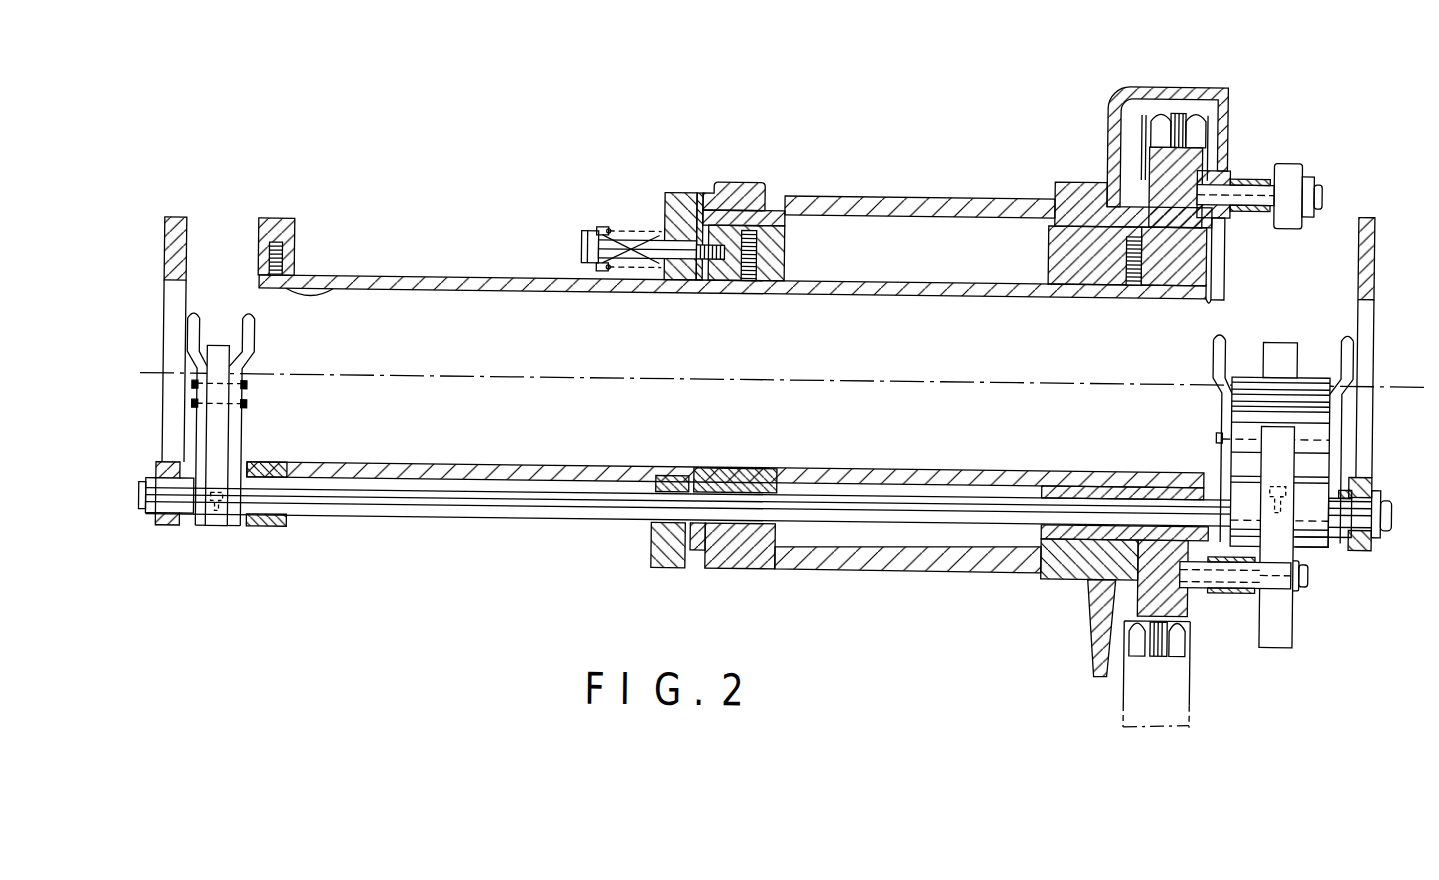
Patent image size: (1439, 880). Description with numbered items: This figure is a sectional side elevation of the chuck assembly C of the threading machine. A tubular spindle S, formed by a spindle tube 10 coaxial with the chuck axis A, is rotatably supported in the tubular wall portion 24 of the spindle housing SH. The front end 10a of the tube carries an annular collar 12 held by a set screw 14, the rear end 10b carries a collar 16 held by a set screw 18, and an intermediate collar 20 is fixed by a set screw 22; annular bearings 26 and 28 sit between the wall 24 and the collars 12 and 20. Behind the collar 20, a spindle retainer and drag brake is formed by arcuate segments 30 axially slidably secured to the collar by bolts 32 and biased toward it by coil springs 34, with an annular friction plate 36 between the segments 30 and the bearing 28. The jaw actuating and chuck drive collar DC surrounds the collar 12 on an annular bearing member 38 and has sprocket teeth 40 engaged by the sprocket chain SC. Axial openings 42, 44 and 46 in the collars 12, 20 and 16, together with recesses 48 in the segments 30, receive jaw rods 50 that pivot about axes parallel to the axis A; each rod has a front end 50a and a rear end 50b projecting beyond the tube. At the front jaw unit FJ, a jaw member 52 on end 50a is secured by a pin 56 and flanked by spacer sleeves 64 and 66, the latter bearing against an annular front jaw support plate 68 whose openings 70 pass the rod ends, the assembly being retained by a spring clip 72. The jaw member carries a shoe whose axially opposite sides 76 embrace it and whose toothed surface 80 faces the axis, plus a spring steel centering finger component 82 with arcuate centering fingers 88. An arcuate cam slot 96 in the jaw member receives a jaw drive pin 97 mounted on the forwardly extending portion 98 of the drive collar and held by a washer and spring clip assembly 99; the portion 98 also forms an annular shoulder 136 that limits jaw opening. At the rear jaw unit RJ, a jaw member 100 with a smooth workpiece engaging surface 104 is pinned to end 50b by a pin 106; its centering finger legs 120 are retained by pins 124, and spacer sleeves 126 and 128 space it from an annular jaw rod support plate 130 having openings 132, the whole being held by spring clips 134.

The spindle tube 10 is at (452, 281).
The front end 10a is at (1215, 296).
The rear end 10b is at (334, 291).
The annular collar 12 is at (1052, 241).
The set screw 14 is at (1128, 267).
The collar 16 is at (293, 237).
The set screw 18 is at (283, 265).
The collar 20 is at (788, 240).
The set screw 22 is at (788, 264).
The tubular wall portion 24 is at (830, 196).
The annular bearing 26 is at (1052, 210).
The annular bearing 28 is at (755, 190).
The arcuate segments 30 is at (668, 196).
The bolts 32 is at (632, 247).
The coil spring 34 is at (628, 268).
The annular friction plate 36 is at (698, 200).
The annular bearing member 38 is at (1142, 235).
The sprocket teeth 40 is at (1190, 110).
The axially extending opening 42 is at (1070, 493).
The axially extending opening 44 is at (740, 490).
The axially extending opening 46 is at (268, 483).
The recesses 48 is at (640, 476).
The jaw rod 50 is at (845, 508).
The front end 50a is at (1385, 517).
The rear end 50b is at (153, 496).
The jaw member 52 is at (1278, 642).
The pin 56 is at (1262, 470).
The spacer sleeve 64 is at (1243, 504).
The spacer sleeve 66 is at (1312, 543).
The annular front jaw support plate 68 is at (1378, 230).
The openings 70 is at (1362, 494).
The spring clip 72 is at (1385, 497).
The axially opposite sides 76 is at (1243, 416).
The arcuate toothed workpiece engaging surface 80 is at (1245, 366).
The centering finger component 82 is at (1238, 437).
The arcuate centering fingers 88 is at (1215, 356).
The elongate arcuate cam slot 96 is at (1287, 648).
The jaw drive pin 97 is at (1282, 175).
The annular axially forwardly extending portion 98 is at (1240, 182).
The washer and spring clip assembly 99 is at (1318, 176).
The jaw member 100 is at (215, 356).
The arcuate workpiece engaging surface 104 is at (220, 436).
The pin 106 is at (221, 536).
The second leg portions 120 is at (192, 358).
The pins 124 is at (246, 408).
The spacer sleeve 126 is at (250, 532).
The spacer sleeve 128 is at (178, 537).
The annular jaw rod support plate 130 is at (164, 270).
The openings 132 is at (165, 536).
The spring clips 134 is at (150, 519).
The annular shoulder 136 is at (1222, 192).
The chuck axis A is at (668, 378).
The chuck assembly C is at (1330, 135).
The jaw actuating and chuck drive collar DC is at (1125, 103).
The front jaw unit FJ is at (1382, 434).
The rear jaw unit RJ is at (157, 417).
The tubular spindle S is at (938, 276).
The sprocket chain SC is at (1125, 711).
The spindle housing SH is at (930, 190).